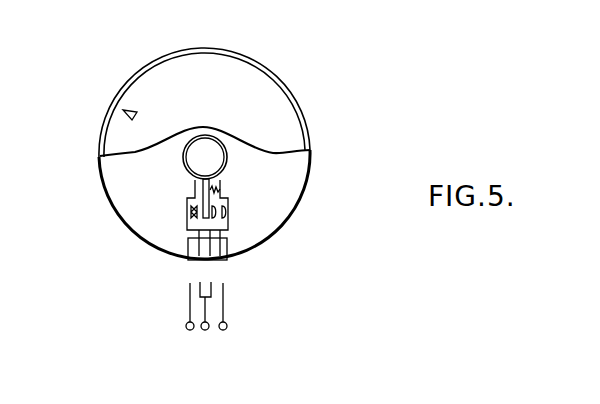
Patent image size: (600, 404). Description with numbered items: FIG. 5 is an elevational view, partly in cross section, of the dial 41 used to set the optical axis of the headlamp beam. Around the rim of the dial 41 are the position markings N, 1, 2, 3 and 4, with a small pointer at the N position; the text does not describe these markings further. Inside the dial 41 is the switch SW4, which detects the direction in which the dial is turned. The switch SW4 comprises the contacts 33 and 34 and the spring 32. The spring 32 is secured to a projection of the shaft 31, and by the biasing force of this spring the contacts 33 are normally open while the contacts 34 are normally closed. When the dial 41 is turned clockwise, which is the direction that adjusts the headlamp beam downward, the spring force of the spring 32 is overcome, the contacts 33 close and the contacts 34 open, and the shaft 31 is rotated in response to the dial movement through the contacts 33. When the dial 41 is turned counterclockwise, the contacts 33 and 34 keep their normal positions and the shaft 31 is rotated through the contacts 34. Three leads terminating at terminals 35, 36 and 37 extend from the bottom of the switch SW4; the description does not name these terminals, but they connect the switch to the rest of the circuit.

The scale mark 1 is at (151, 58).
The scale mark 2 is at (207, 42).
The scale mark 3 is at (265, 60).
The scale mark 4 is at (308, 104).
The neutral position mark N is at (107, 98).
The dial 41 is at (316, 150).
The shaft 31 is at (217, 162).
The spring 32 is at (223, 190).
The contacts 33 is at (217, 220).
The contacts 34 is at (197, 213).
The terminal 35 is at (186, 330).
The terminal 36 is at (204, 330).
The terminal 37 is at (226, 330).
The switch SW4 is at (236, 242).